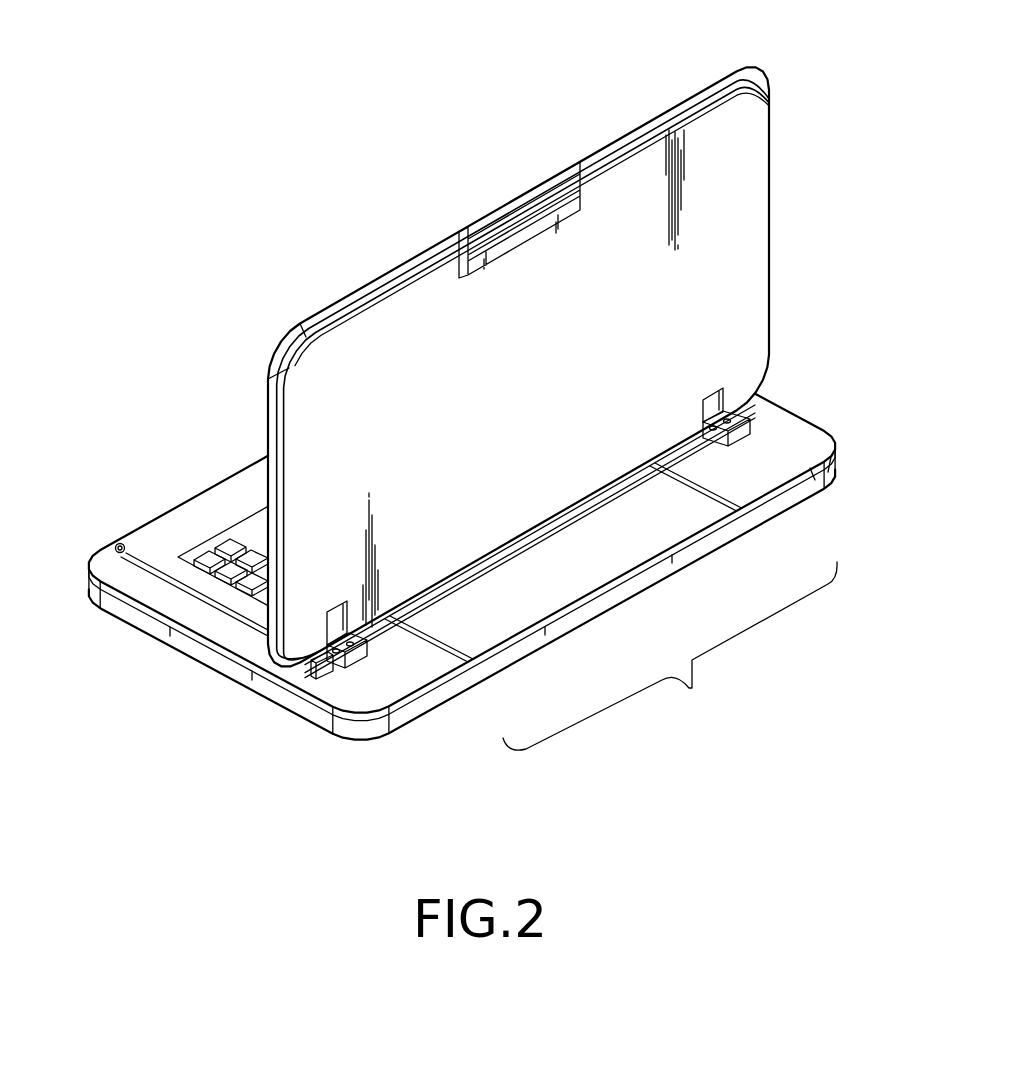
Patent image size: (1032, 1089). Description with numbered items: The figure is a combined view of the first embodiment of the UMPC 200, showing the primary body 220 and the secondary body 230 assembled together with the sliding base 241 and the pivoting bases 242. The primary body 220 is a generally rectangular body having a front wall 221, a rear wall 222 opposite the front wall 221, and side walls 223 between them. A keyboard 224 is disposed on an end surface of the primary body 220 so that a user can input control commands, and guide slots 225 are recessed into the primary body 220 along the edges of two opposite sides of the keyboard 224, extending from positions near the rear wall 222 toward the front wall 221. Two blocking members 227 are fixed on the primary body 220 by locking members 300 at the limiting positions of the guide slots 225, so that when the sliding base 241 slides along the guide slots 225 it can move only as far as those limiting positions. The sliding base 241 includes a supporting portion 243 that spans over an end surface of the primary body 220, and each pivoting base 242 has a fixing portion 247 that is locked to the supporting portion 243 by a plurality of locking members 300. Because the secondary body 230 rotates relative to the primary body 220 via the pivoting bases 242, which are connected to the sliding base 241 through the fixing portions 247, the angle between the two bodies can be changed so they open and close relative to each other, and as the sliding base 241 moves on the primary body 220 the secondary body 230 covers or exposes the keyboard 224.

The UMPC 200 is at (919, 44).
The secondary body 230 is at (797, 239).
The primary body 220 is at (482, 613).
The front wall 221 is at (208, 560).
The rear wall 222 is at (815, 485).
The side walls 223 is at (231, 670).
The keyboard 224 is at (121, 546).
The guide slots 225 is at (160, 582).
The blocking members 227 is at (113, 548).
The locking members 300 is at (118, 545).
The sliding base 241 is at (555, 613).
The pivoting bases 242 is at (571, 577).
The supporting portion 243 is at (340, 669).
The fixing portion 247 is at (362, 645).